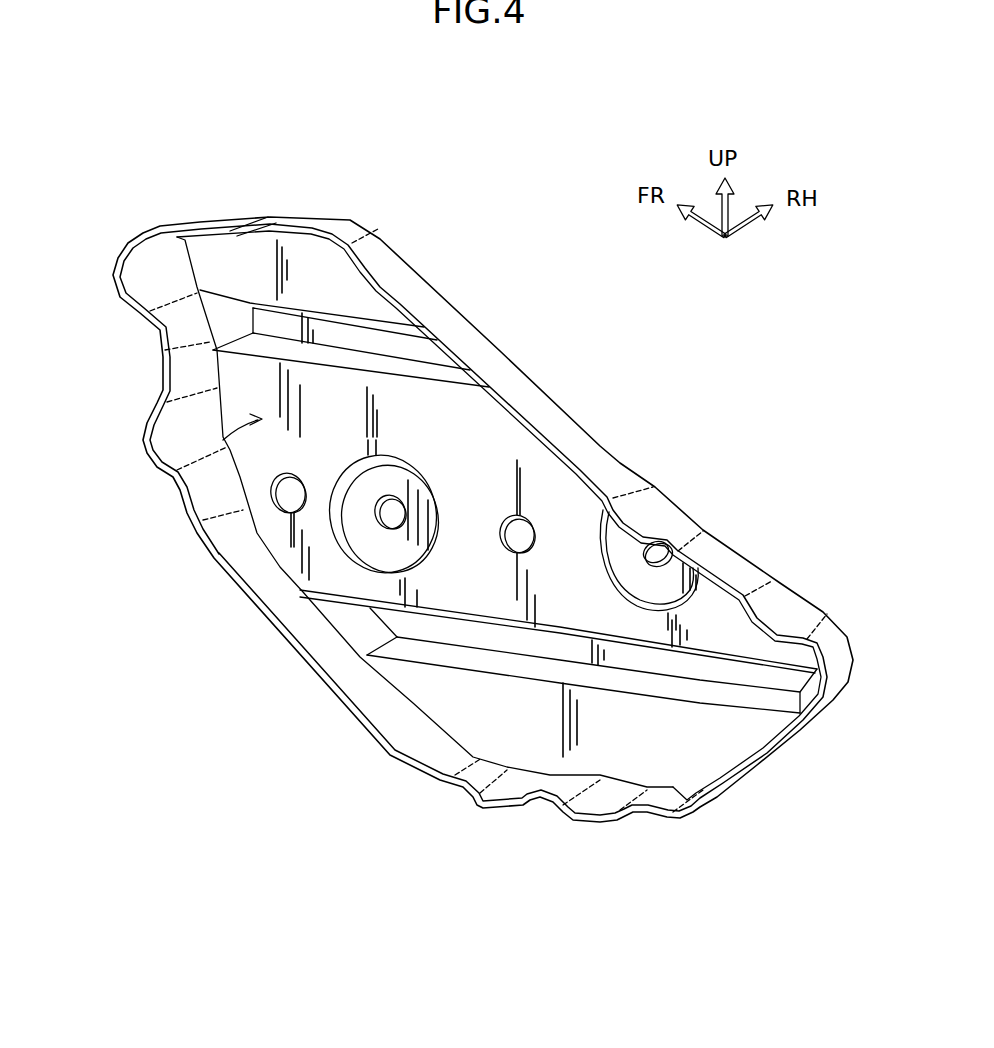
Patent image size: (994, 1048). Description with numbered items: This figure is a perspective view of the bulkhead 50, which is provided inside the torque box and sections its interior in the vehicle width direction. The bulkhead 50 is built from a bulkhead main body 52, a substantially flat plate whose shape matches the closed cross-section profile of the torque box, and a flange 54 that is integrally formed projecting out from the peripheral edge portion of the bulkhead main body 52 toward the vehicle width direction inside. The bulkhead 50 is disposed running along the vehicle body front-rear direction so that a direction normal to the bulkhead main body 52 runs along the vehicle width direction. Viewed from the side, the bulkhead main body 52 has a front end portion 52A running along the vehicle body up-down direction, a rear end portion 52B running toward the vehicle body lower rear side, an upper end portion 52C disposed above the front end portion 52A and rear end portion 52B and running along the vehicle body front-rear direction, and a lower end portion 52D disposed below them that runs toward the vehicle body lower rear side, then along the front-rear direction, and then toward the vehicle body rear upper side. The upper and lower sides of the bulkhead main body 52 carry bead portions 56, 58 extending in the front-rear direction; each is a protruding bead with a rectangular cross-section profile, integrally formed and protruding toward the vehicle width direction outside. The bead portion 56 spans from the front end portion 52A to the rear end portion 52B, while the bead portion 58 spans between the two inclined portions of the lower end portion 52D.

The bulkhead 50 is at (350, 190).
The bulkhead main body 52 is at (180, 483).
The front end portion 52A is at (190, 347).
The rear end portion 52B is at (743, 552).
The upper end portion 52C is at (290, 215).
The lower end portion 52D is at (622, 780).
The flange 54 is at (523, 397).
The bead portion 56 is at (387, 347).
The bead portion 58 is at (730, 670).